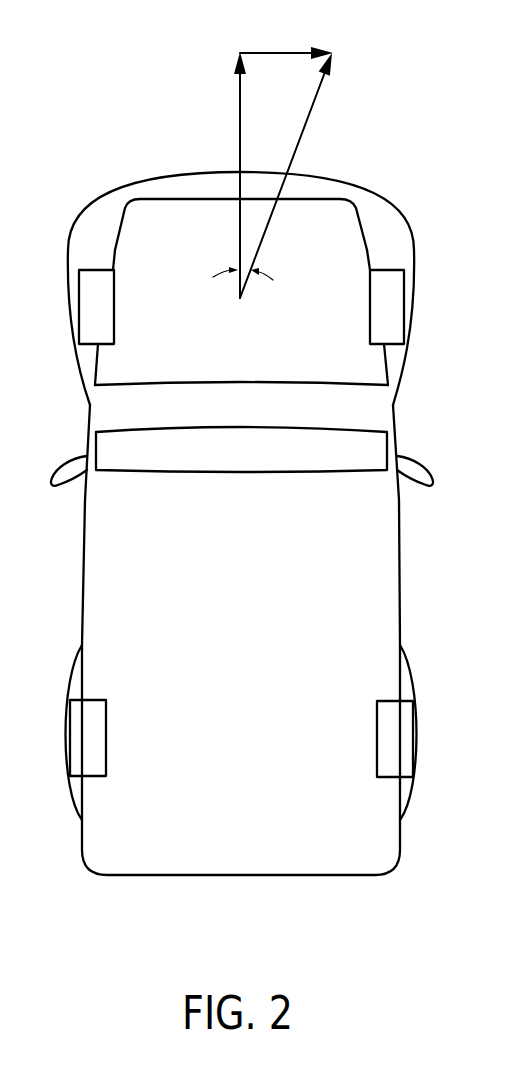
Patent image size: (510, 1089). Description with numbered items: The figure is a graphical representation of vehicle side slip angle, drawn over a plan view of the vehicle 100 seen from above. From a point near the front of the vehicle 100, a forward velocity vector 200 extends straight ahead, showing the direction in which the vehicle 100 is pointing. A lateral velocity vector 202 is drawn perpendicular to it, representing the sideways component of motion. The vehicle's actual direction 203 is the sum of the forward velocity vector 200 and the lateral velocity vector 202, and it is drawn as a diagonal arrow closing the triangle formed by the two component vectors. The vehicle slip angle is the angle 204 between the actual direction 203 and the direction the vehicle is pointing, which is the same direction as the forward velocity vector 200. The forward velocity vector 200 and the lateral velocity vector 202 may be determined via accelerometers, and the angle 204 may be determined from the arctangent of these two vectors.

The vehicle 100 is at (406, 879).
The forward velocity vector 200 is at (237, 108).
The lateral velocity vector 202 is at (276, 52).
The actual direction 203 is at (303, 132).
The angle 204 is at (262, 279).